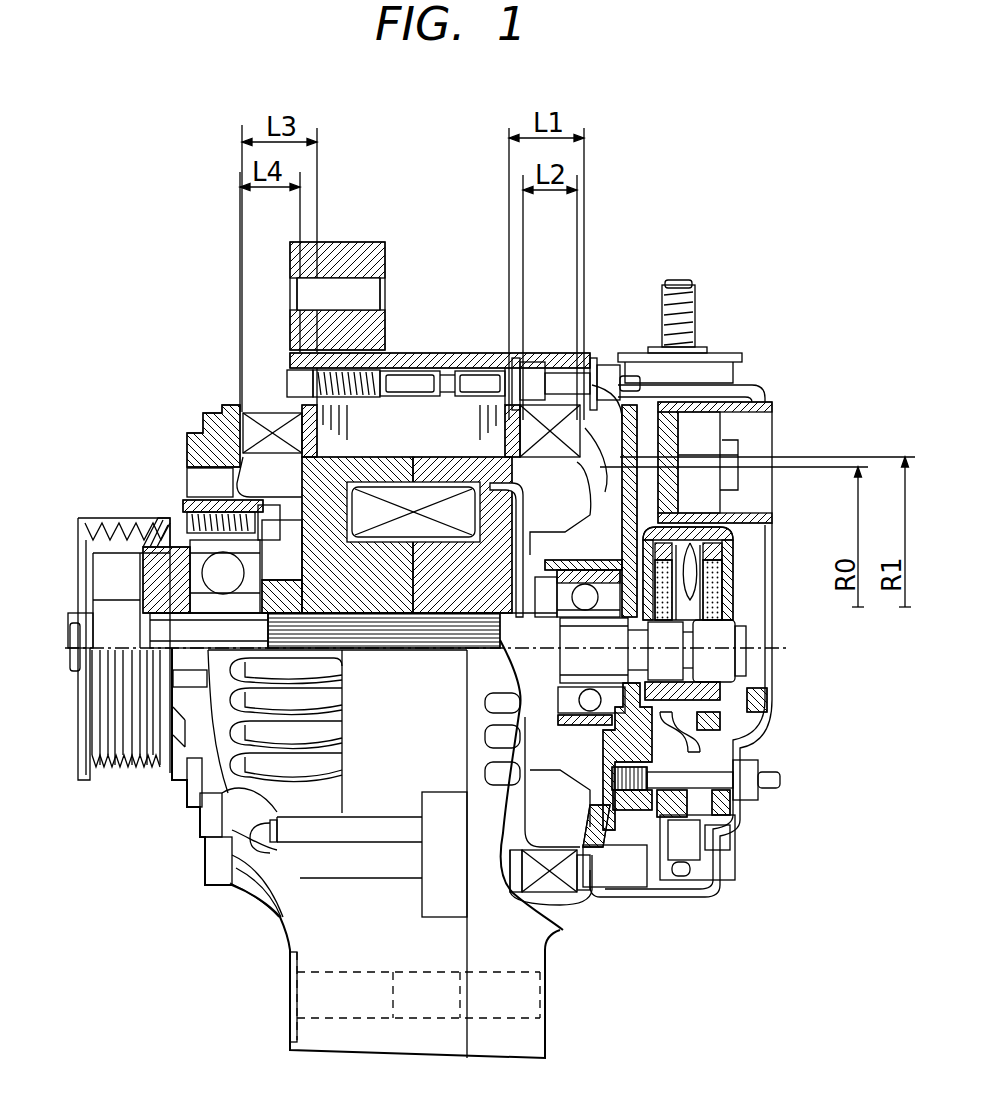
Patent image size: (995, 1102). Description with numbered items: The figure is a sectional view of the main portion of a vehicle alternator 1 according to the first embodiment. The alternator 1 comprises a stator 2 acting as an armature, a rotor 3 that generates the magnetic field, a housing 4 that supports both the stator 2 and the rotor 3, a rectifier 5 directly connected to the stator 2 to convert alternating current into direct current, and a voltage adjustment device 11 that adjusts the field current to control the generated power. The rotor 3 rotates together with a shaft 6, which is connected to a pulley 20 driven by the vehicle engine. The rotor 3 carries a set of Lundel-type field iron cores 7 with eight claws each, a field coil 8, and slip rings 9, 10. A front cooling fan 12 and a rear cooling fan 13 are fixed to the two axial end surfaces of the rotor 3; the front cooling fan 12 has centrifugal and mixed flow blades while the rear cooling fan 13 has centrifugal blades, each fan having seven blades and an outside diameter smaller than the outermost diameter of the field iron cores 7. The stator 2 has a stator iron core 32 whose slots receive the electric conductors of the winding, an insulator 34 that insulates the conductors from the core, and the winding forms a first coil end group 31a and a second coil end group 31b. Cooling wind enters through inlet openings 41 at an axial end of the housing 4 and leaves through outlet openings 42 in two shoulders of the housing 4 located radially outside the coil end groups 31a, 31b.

The alternator 1 is at (683, 933).
The stator 2 is at (567, 427).
The rotor 3 is at (283, 480).
The housing 4 is at (303, 927).
The rectifier 5 is at (727, 810).
The shaft 6 is at (160, 552).
The Lundel-type field iron cores 7 is at (380, 600).
The field coil 8 is at (413, 500).
The slip ring 9 is at (730, 640).
The slip ring 10 is at (670, 660).
The voltage adjustment device 11 is at (762, 440).
The front cooling fan 12 is at (195, 483).
The rear cooling fan 13 is at (770, 403).
The pulley 20 is at (88, 518).
The first coil end group 31a is at (575, 487).
The second coil end group 31b is at (305, 415).
The stator iron core 32 is at (473, 410).
The insulator 34 is at (537, 378).
The inlet openings 41 is at (210, 440).
The outlet openings 42 is at (488, 775).